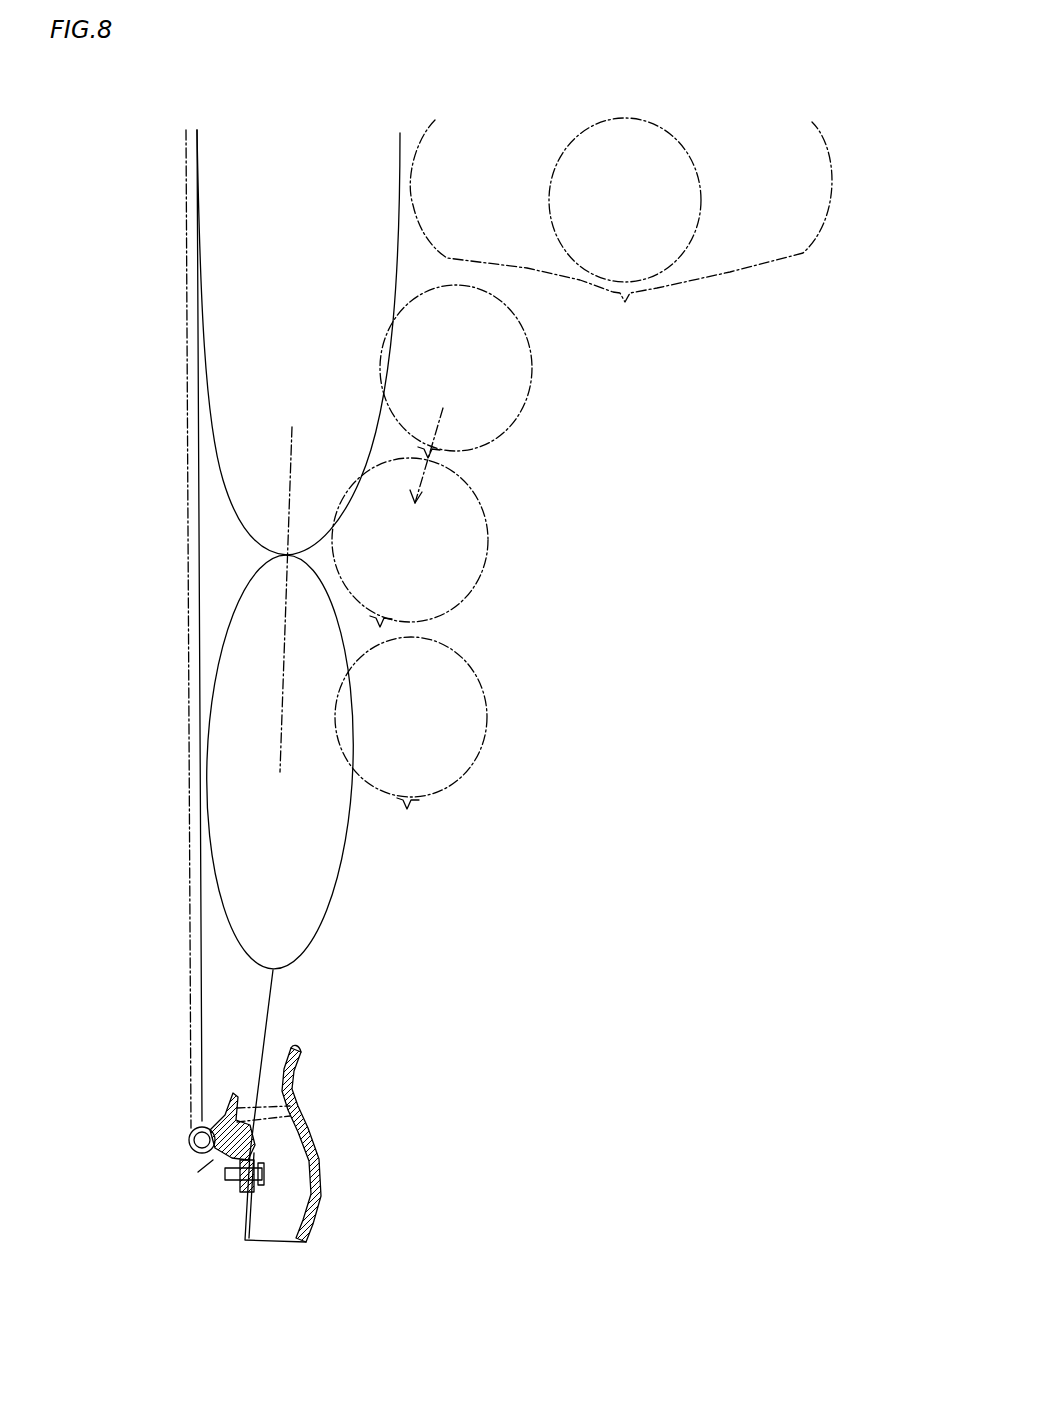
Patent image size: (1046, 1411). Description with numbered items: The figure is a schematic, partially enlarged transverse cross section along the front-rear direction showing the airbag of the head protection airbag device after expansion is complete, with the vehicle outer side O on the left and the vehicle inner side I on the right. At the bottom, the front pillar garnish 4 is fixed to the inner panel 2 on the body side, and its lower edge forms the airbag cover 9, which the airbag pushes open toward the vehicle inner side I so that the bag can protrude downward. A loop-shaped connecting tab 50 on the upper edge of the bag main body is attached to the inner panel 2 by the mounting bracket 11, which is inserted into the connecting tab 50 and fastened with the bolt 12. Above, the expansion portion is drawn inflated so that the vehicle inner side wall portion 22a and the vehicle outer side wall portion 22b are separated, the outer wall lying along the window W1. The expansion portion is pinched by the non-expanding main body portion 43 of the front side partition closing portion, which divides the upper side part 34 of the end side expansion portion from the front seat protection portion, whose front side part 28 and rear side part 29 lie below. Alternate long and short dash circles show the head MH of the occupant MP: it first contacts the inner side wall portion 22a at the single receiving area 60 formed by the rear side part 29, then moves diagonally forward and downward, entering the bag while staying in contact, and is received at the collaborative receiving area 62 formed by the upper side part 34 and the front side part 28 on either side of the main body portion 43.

The vehicle outer side wall portion 22b is at (197, 243).
The rear side part 29 is at (224, 485).
The front side part 28 is at (400, 178).
The vehicle inner side wall portion 22a is at (400, 225).
The main body portion 43 is at (292, 427).
The upper side part 34 is at (370, 888).
The head MH is at (683, 182).
The occupant MP is at (763, 282).
The single receiving area 60 is at (402, 333).
The collaborative receiving area 62 is at (402, 567).
The window W1 is at (188, 655).
The connecting tab 50 is at (276, 1012).
The inner panel 2 is at (243, 1205).
The front pillar garnish 4 is at (322, 1176).
The airbag cover 9 is at (302, 1082).
The mounting bracket 11 is at (254, 1162).
The bolt 12 is at (268, 1180).
The vehicle outer side O is at (112, 1063).
The vehicle inner side I is at (866, 1058).